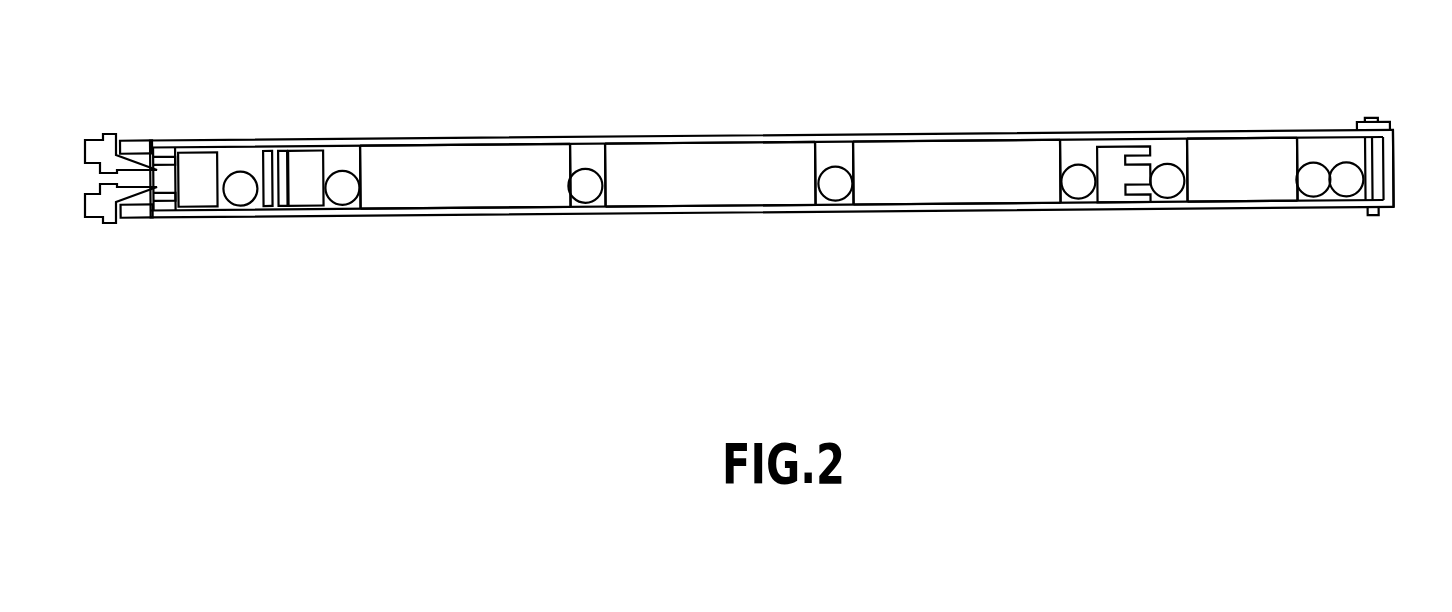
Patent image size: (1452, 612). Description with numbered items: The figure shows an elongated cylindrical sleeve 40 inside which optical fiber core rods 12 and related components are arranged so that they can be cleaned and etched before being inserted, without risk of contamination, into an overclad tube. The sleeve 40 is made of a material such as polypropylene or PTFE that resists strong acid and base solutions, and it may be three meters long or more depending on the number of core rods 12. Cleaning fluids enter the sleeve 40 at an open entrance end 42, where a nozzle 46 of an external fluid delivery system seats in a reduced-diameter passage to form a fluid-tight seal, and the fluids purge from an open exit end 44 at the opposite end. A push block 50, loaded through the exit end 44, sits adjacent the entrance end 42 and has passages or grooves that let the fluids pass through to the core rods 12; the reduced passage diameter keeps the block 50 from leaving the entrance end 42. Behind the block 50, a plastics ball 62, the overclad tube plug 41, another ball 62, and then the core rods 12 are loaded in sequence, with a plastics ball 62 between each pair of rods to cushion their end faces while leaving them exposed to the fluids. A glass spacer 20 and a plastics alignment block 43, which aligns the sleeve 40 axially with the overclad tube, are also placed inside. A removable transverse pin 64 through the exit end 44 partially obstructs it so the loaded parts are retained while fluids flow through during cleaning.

The sleeve 40 is at (691, 132).
The core rods 12 is at (482, 152).
The plastics ball 62 is at (237, 180).
The push block 50 is at (198, 157).
The overclad tube plug 41 is at (307, 202).
The glass spacer 20 is at (1115, 152).
The alignment block 43 is at (1247, 193).
The exit end 44 is at (1394, 131).
The transverse pin 64 is at (1368, 216).
The entrance end 42 is at (132, 140).
The nozzle 46 is at (93, 138).